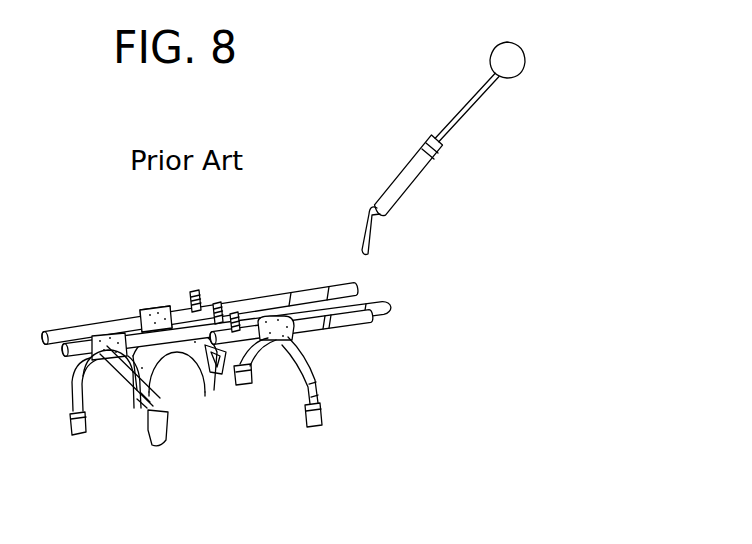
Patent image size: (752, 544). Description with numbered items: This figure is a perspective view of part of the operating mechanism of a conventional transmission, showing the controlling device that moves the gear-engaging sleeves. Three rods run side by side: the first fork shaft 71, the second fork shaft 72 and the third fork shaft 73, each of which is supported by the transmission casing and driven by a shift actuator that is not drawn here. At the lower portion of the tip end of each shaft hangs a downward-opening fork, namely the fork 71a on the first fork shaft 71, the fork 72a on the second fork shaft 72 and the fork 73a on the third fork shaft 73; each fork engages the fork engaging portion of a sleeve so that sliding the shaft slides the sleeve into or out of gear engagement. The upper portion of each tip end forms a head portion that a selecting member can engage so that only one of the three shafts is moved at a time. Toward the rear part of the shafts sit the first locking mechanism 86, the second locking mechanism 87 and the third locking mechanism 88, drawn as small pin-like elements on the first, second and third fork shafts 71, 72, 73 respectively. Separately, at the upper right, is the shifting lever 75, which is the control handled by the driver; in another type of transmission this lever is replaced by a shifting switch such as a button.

The first fork shaft 71 is at (121, 312).
The second fork shaft 72 is at (114, 383).
The third fork shaft 73 is at (299, 400).
The fork 71a is at (209, 376).
The fork 72a is at (80, 435).
The fork 73a is at (313, 427).
The shifting lever 75 is at (448, 100).
The first locking mechanism 86 is at (194, 290).
The second locking mechanism 87 is at (216, 302).
The third locking mechanism 88 is at (234, 313).